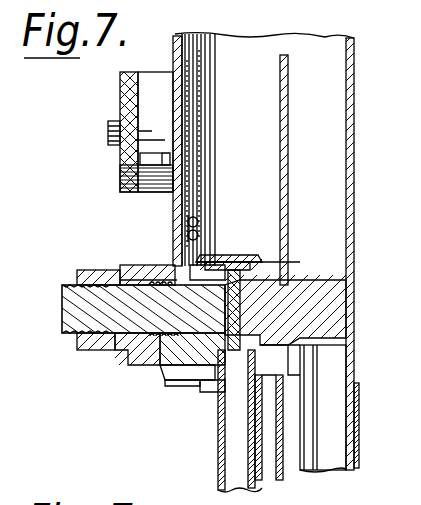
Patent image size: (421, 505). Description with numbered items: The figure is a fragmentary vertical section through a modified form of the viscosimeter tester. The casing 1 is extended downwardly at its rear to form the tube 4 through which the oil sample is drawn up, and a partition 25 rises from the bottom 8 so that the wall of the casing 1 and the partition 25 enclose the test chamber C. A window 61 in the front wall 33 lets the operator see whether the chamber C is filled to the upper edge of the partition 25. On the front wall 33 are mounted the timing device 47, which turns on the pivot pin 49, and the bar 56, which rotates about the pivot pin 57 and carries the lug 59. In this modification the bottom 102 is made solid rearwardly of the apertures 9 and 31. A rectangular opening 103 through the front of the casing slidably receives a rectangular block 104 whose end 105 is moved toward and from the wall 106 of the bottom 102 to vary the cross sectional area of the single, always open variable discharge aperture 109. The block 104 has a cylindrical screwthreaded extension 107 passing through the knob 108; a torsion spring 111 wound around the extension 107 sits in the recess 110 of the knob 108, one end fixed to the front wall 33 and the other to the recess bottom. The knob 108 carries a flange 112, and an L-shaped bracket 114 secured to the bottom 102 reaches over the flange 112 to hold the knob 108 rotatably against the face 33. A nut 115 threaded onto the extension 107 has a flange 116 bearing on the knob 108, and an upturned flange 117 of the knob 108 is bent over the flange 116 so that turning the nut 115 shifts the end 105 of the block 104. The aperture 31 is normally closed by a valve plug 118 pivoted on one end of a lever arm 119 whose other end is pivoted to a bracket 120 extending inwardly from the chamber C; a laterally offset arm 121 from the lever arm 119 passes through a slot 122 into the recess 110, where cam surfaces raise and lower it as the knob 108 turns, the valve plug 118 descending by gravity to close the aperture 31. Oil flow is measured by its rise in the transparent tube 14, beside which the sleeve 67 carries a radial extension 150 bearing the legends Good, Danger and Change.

The casing 1 is at (355, 44).
The tube 4 is at (335, 372).
The bottom 8 is at (175, 250).
The aperture 9 is at (288, 330).
The transparent tube 14 is at (218, 472).
The partition 25 is at (288, 108).
The aperture 31 is at (270, 285).
The front wall 33 is at (181, 178).
The timing device 47 is at (112, 101).
The pivot pin 49 is at (108, 136).
The bar 56 is at (165, 195).
The pivot pin 57 is at (185, 225).
The lug 59 is at (140, 158).
The window 61 is at (173, 52).
The sleeve 67 is at (359, 410).
The bottom 102 is at (165, 378).
The rectangular opening 103 is at (212, 385).
The rectangular block 104 is at (165, 360).
The end of block 105 is at (290, 322).
The wall 106 is at (290, 282).
The cylindrical screwthreaded extension 107 is at (62, 320).
The knob 108 is at (170, 365).
The variable discharge aperture 109 is at (300, 296).
The recess 110 is at (130, 268).
The torsion spring 111 is at (75, 300).
The flange 112 is at (412, 158).
The L-shaped bracket 114 is at (200, 385).
The nut 115 is at (77, 343).
The flange 116 is at (84, 273).
The upturned flange 117 is at (120, 358).
The valve plug 118 is at (256, 262).
The lever arm 119 is at (228, 264).
The bracket 120 is at (204, 252).
The laterally offset arm 121 is at (214, 262).
The slot 122 is at (150, 275).
The radial extension 150 is at (262, 485).
The chamber C is at (270, 158).